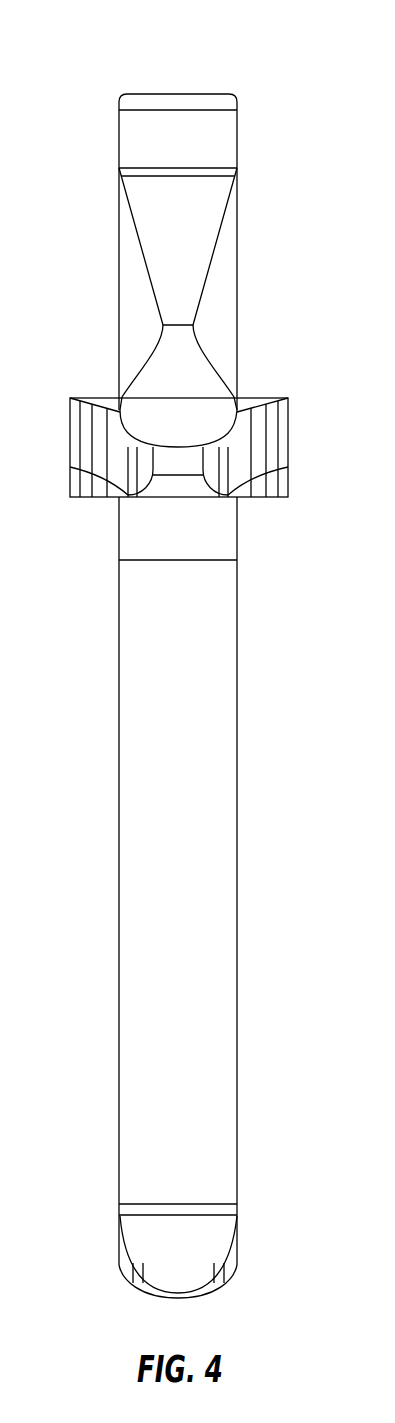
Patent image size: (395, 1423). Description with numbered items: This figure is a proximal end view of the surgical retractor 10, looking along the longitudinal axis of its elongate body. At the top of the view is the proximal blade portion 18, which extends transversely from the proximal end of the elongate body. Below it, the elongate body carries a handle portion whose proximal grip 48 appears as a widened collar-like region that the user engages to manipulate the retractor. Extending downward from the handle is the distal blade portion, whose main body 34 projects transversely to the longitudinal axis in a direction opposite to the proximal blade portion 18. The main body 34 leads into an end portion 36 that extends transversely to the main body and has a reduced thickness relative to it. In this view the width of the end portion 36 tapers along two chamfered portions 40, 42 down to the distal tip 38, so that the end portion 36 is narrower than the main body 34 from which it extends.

The surgical retractor 10 is at (293, 58).
The proximal blade portion 18 is at (238, 259).
The proximal grip 48 is at (289, 432).
The main body 34 is at (119, 1001).
The end portion 36 is at (192, 1240).
The distal tip 38 is at (179, 1300).
The chamfered portion 40 is at (124, 1268).
The chamfered portion 42 is at (232, 1268).